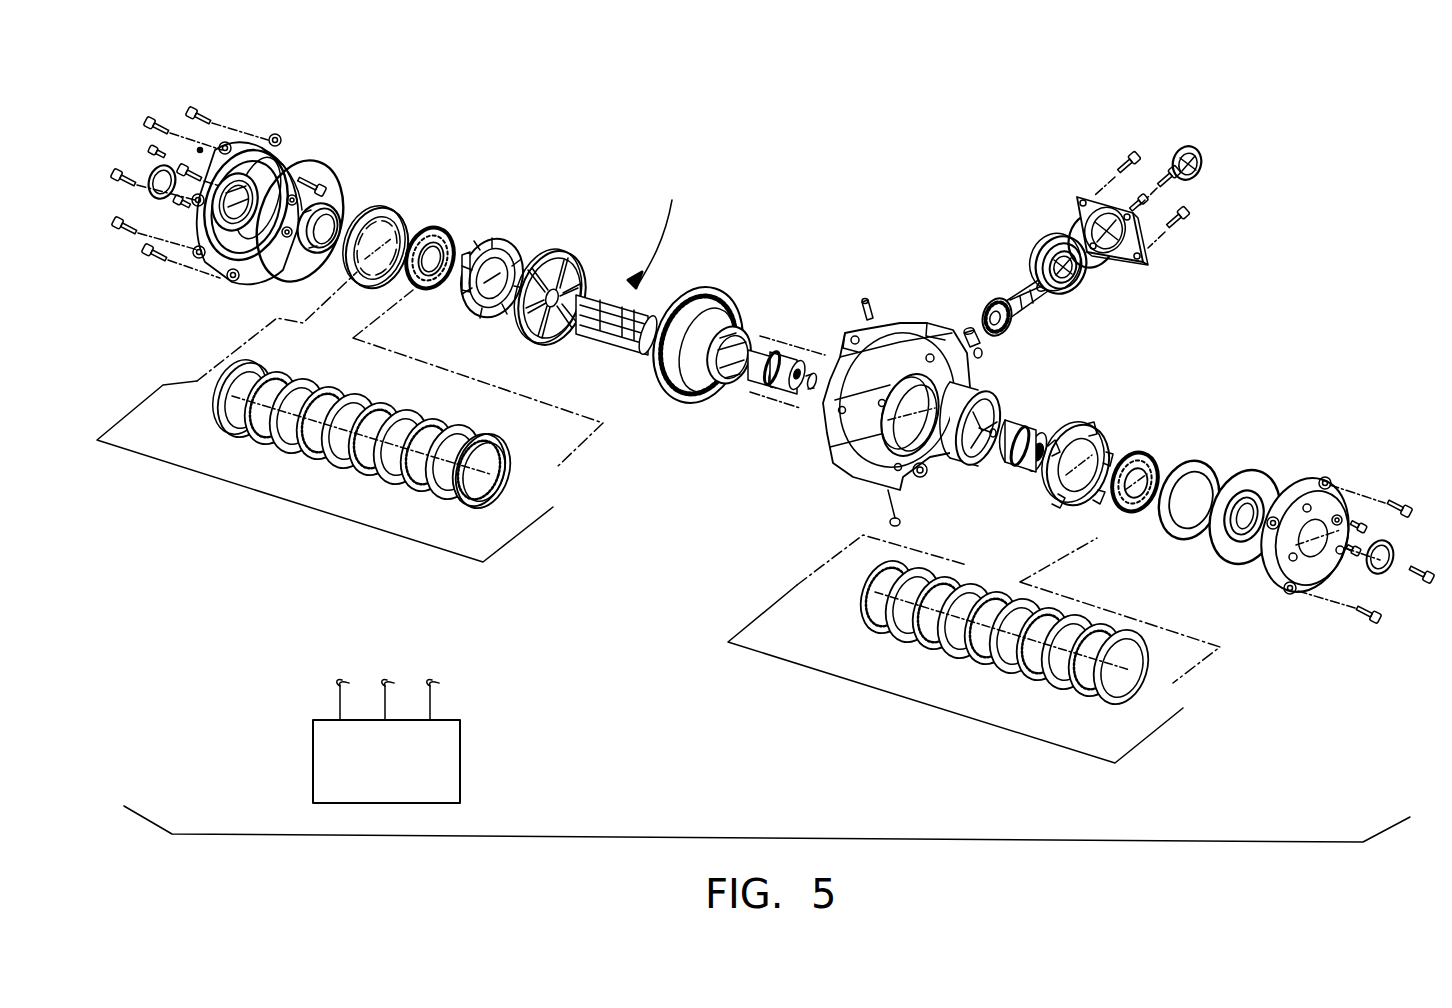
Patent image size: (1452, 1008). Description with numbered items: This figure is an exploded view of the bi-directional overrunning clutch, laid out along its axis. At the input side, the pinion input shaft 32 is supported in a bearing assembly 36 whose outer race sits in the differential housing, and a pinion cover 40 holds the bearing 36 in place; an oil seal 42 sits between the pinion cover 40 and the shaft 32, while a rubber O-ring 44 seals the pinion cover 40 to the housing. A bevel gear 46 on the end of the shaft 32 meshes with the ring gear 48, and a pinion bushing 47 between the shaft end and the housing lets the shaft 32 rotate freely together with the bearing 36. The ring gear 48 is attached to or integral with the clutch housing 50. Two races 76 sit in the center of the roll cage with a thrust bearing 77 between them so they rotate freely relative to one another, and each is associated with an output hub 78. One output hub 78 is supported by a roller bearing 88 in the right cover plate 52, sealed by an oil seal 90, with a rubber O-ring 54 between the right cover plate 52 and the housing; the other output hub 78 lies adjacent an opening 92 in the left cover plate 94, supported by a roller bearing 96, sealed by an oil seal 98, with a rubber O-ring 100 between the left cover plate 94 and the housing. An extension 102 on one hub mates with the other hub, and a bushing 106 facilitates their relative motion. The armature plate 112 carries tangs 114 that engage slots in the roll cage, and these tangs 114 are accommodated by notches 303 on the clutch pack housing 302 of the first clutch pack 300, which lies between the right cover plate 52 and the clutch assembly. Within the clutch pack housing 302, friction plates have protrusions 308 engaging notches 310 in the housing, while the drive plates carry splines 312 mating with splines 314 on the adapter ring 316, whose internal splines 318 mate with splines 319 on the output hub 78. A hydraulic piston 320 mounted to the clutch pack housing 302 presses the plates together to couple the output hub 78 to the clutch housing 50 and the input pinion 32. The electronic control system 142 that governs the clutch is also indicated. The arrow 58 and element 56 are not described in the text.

The pinion input shaft 32 is at (1005, 300).
The bearing assembly 36 is at (1086, 278).
The pinion cover 40 is at (1147, 254).
The oil seal 42 is at (1186, 148).
The rubber O-ring 44 is at (1075, 240).
The bevel gear 46 is at (982, 338).
The pinion bushing 47 is at (984, 354).
The ring gear 48 is at (711, 303).
The clutch housing 50 is at (714, 324).
The right cover plate 52 is at (212, 278).
The rubber O-ring 54 is at (280, 275).
The differential cup 56 is at (975, 400).
The shaft 58 is at (658, 231).
The race 76 is at (787, 358).
The thrust bearing 77 is at (825, 385).
The output hub 78 is at (753, 374).
The roller bearing 88 is at (324, 205).
The oil seal 90 is at (156, 168).
The opening 92 is at (1320, 577).
The left cover plate 94 is at (1288, 596).
The roller bearing 96 is at (1244, 505).
The oil seal 98 is at (1392, 553).
The rubber O-ring 100 is at (1307, 546).
The extension 102 is at (1015, 420).
The bushing 106 is at (808, 392).
The armature plate 112 is at (575, 267).
The tangs 114 is at (549, 345).
The electronic control system 142 is at (438, 741).
The first clutch pack 300 is at (300, 504).
The clutch pack housing 302 is at (516, 204).
The notches 303 is at (560, 273).
The protrusions 308 is at (463, 424).
The notches 310 is at (492, 204).
The splines 312 is at (500, 456).
The splines 314 is at (431, 226).
The adapter ring 316 is at (457, 240).
The internal splines 318 is at (422, 278).
The splines 319 is at (763, 380).
The hydraulic piston 320 is at (381, 208).